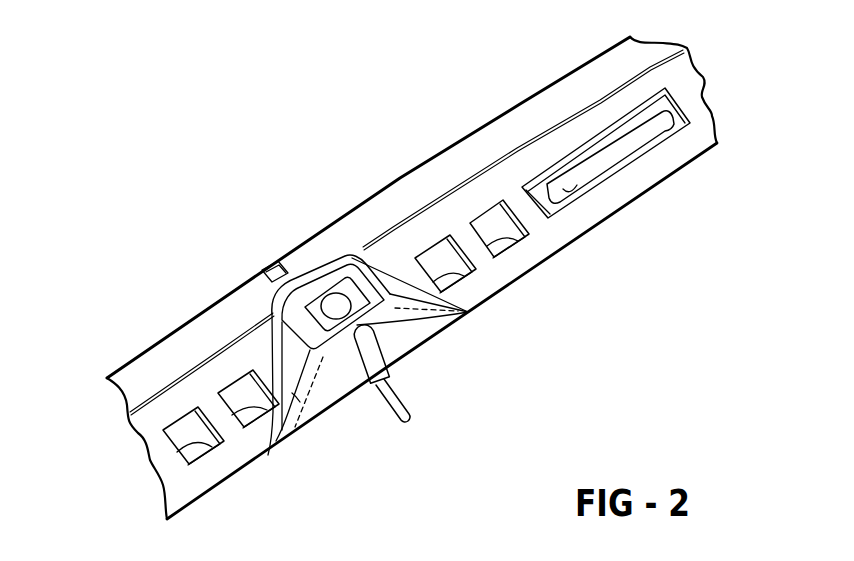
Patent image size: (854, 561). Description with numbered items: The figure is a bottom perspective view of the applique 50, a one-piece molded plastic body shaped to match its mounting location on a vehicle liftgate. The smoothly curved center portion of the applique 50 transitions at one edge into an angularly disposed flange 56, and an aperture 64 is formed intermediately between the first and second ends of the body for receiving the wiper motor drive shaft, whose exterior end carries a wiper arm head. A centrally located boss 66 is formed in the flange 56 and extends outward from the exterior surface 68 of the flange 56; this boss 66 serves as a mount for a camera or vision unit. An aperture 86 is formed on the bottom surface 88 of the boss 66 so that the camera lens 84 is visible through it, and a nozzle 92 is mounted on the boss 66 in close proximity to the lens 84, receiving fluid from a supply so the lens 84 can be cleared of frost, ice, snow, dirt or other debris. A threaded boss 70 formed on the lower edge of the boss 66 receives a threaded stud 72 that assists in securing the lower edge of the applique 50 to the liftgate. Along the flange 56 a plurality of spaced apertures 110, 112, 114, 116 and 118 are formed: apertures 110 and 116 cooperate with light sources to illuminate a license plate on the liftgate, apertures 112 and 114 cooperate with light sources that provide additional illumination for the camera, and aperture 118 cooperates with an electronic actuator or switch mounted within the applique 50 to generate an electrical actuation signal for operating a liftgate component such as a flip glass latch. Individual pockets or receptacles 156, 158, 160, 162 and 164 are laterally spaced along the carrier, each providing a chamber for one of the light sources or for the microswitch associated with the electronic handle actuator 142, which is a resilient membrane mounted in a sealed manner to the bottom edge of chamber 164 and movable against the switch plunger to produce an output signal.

The applique 50 is at (358, 165).
The angularly disposed flange 56 is at (232, 300).
The aperture 64 is at (265, 265).
The boss 66 is at (300, 428).
The exterior surface 68 is at (503, 283).
The threaded boss 70 is at (380, 358).
The threaded stud 72 is at (410, 415).
The camera lens 84 is at (345, 304).
The aperture 86 is at (305, 285).
The bottom surface 88 is at (337, 336).
The nozzle 92 is at (328, 290).
The aperture 110 is at (183, 448).
The aperture 112 is at (258, 418).
The aperture 114 is at (457, 283).
The aperture 116 is at (515, 250).
The aperture 118 is at (572, 188).
The electronic handle actuator 142 is at (648, 135).
The pocket or receptacle 156 is at (177, 423).
The pocket or receptacle 158 is at (230, 395).
The pocket or receptacle 160 is at (443, 255).
The pocket or receptacle 162 is at (486, 215).
The pocket or receptacle 164 is at (597, 142).